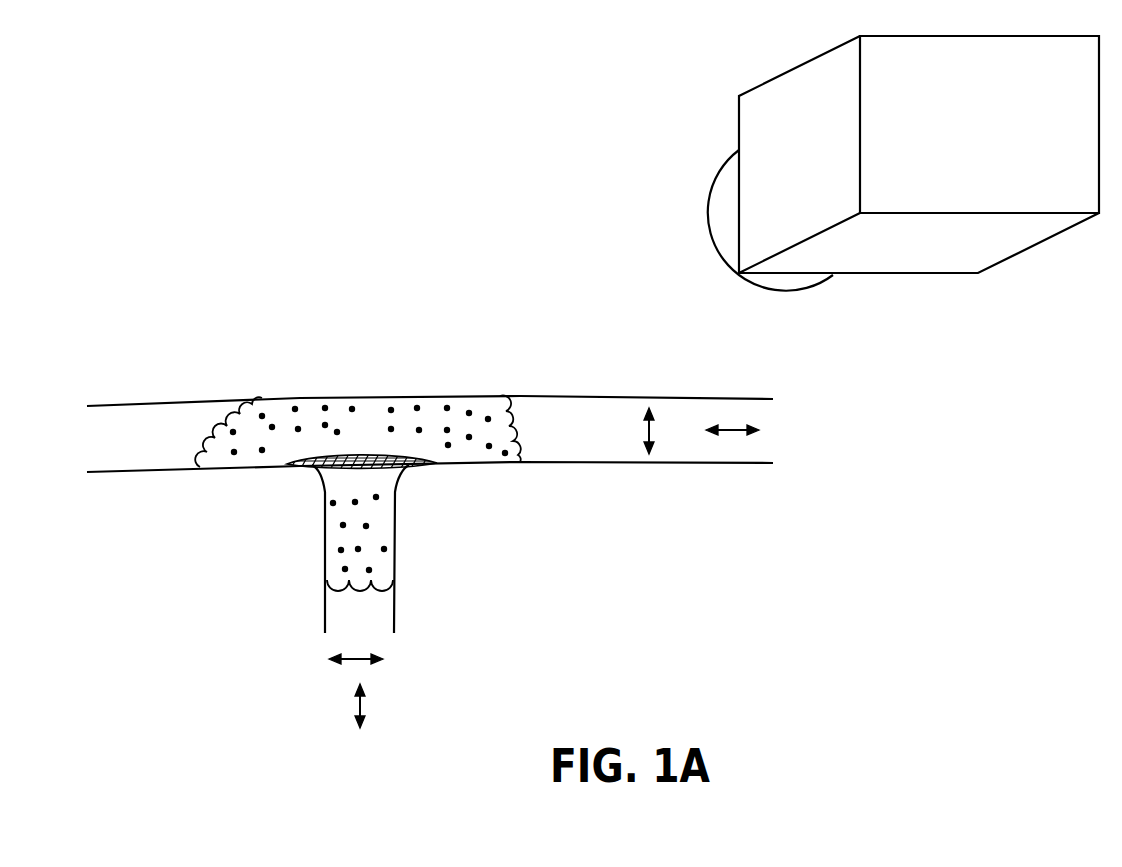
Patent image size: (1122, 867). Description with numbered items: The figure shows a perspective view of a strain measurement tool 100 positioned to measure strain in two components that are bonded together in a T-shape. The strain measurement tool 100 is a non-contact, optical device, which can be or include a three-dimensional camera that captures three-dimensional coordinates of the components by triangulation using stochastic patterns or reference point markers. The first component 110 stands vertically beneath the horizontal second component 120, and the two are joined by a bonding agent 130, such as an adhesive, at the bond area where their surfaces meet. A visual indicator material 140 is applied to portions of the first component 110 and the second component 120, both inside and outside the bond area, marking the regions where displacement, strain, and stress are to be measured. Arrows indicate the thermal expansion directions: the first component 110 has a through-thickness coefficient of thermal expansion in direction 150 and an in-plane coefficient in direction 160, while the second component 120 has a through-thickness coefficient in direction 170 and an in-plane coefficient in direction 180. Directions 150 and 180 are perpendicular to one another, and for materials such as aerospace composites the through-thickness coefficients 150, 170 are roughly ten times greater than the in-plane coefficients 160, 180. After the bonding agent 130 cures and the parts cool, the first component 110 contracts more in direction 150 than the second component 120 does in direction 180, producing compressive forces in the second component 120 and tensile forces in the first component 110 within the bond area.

The strain measurement tool 100 is at (1020, 255).
The first component 110 is at (395, 613).
The second component 120 is at (532, 397).
The bonding agent 130 is at (367, 455).
The visual indicator material 140 is at (310, 412).
The through-thickness CTE direction 150 is at (353, 655).
The in-plane CTE direction 160 is at (350, 708).
The through-thickness CTE direction 170 is at (647, 430).
The in-plane CTE direction 180 is at (733, 428).